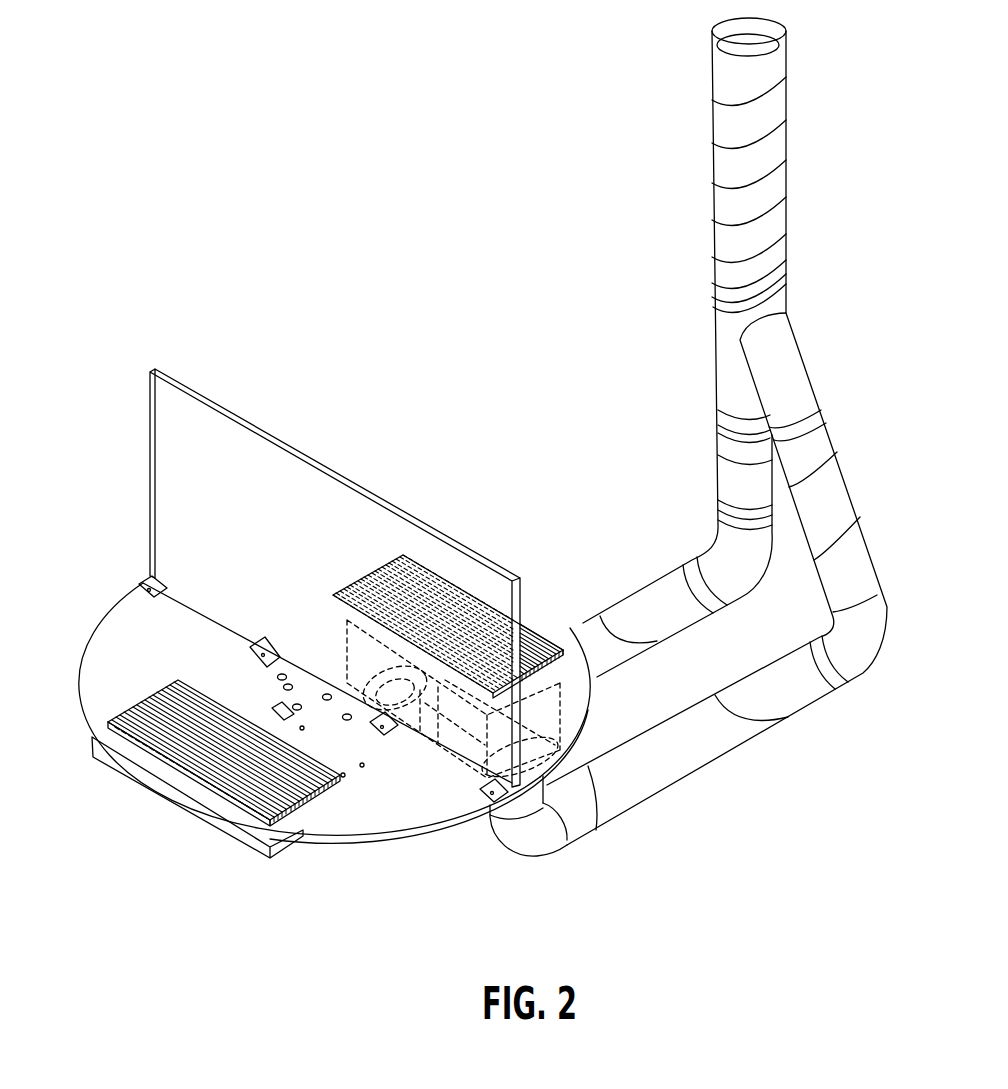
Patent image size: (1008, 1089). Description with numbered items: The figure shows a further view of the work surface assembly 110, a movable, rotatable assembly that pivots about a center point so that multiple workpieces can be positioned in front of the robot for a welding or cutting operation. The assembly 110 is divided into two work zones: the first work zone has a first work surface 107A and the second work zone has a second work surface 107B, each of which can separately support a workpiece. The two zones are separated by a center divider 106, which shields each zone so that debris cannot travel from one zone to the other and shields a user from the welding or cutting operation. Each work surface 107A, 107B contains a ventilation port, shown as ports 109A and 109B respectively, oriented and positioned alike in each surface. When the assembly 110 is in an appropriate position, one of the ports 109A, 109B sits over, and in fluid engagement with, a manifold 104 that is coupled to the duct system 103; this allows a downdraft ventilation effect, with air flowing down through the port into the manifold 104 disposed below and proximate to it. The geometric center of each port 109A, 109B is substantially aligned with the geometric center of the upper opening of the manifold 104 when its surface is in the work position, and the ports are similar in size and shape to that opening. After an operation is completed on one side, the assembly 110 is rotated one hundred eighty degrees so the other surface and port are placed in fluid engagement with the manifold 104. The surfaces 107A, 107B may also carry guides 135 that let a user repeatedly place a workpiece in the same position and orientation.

The duct system 103 is at (783, 168).
The manifold 104 is at (560, 727).
The center divider 106 is at (190, 398).
The first work surface 107A is at (437, 832).
The second work surface 107B is at (577, 695).
The ventilation port 109A is at (176, 759).
The ventilation port 109B is at (528, 635).
The work surface assembly 110 is at (108, 457).
The guide 135 is at (273, 707).